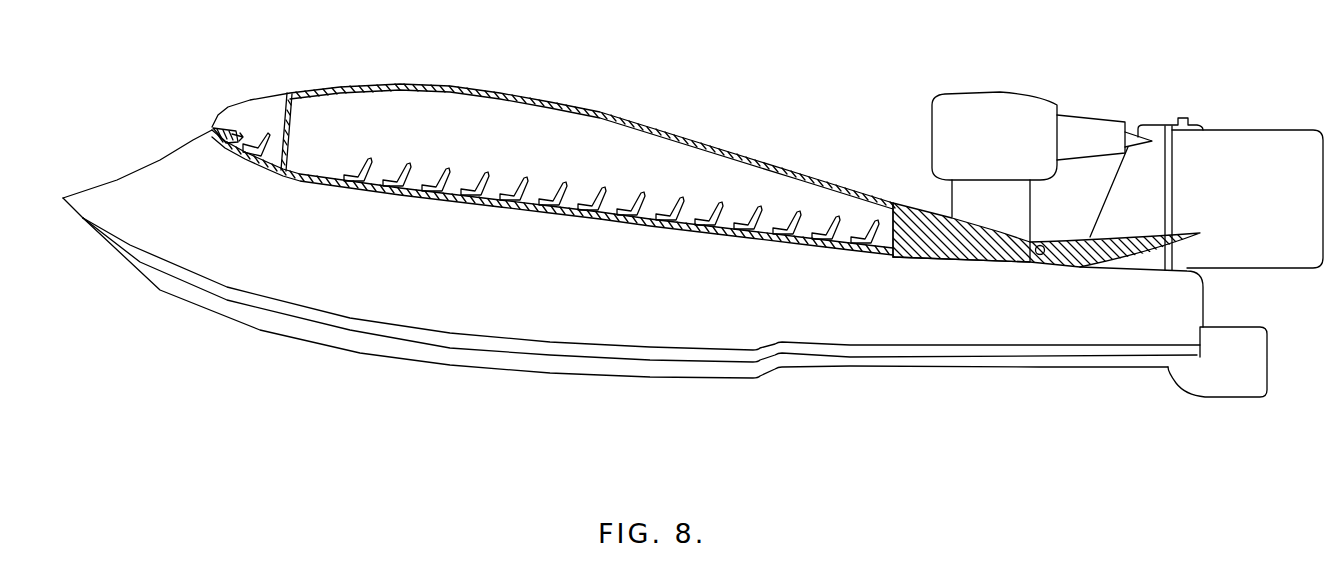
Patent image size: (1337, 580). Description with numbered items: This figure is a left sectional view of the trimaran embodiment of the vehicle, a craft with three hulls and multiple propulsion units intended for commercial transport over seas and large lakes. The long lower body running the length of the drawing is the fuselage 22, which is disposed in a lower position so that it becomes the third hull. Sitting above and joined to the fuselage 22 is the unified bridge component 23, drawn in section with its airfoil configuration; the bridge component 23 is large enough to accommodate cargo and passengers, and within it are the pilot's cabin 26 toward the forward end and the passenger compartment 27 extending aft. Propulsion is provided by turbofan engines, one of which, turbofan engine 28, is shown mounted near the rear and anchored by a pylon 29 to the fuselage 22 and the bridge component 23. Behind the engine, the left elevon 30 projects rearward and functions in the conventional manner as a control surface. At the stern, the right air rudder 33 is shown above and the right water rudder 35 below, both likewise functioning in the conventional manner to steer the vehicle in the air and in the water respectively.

The fuselage 22 is at (605, 294).
The bridge component 23 is at (600, 112).
The pilot's cabin 26 is at (262, 108).
The passenger compartment 27 is at (482, 137).
The turbofan engine 28 is at (1000, 92).
The pylon 29 is at (952, 198).
The left elevon 30 is at (1112, 238).
The right air rudder 33 is at (1259, 203).
The right water rudder 35 is at (1252, 371).